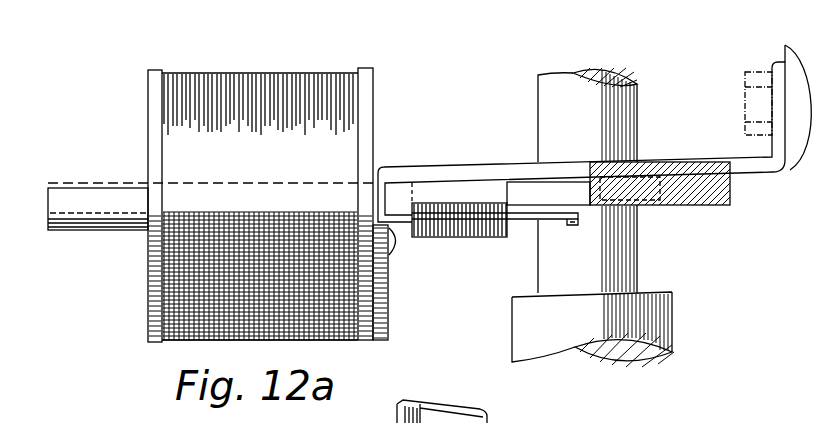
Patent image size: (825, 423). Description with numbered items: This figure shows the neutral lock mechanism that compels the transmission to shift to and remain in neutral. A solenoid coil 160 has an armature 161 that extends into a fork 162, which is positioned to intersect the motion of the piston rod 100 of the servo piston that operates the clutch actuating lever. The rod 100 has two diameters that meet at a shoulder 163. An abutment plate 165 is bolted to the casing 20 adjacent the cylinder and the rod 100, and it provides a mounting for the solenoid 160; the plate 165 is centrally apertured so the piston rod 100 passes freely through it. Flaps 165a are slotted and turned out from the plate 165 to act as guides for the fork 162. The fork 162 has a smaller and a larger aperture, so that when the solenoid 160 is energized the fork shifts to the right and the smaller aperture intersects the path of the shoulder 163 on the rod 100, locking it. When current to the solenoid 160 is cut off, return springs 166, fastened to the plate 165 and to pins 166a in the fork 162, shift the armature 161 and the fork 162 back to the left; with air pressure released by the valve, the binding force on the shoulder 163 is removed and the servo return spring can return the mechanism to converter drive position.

The casing 20 is at (793, 66).
The piston rod 100 is at (615, 120).
The solenoid coil 160 is at (255, 83).
The armature 161 is at (76, 188).
The fork 162 is at (548, 190).
The shoulder 163 is at (650, 295).
The abutment plate 165 is at (437, 170).
The flaps 165a is at (670, 170).
The return springs 166 is at (485, 234).
The pins 166a is at (575, 226).